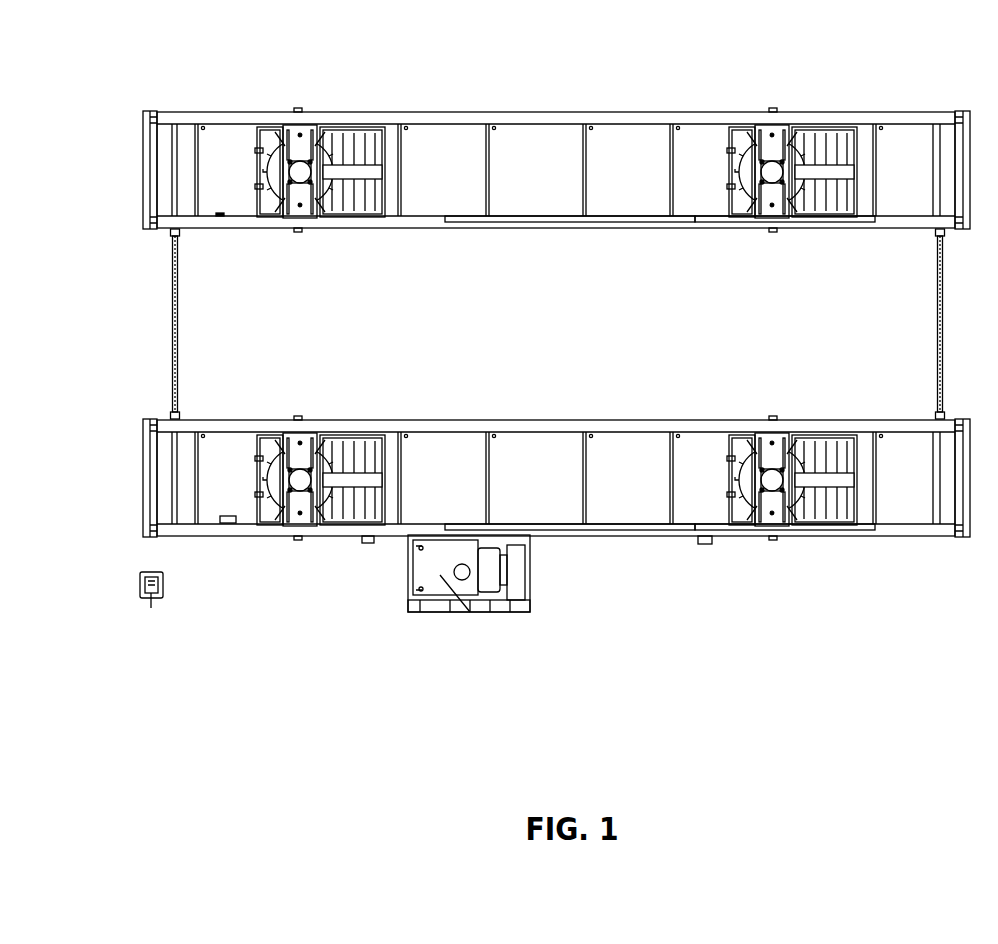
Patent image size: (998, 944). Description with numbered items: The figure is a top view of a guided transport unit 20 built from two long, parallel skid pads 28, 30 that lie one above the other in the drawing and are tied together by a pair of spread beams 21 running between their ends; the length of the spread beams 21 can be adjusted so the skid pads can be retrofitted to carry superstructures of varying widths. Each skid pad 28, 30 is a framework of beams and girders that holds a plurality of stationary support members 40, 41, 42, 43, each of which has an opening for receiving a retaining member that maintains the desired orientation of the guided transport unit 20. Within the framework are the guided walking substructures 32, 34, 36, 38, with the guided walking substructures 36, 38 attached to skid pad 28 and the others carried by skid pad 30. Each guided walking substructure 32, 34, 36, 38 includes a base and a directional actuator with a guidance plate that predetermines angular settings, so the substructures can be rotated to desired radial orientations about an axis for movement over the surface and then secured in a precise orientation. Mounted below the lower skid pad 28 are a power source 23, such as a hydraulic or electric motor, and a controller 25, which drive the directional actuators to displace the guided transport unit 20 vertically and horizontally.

The guided transport unit 20 is at (543, 74).
The spread beams 21 is at (177, 327).
The power source 23 is at (437, 572).
The controller 25 is at (158, 590).
The skid pad 28 is at (118, 456).
The skid pad 30 is at (118, 148).
The guided walking substructure 32 is at (830, 188).
The guided walking substructure 34 is at (350, 188).
The guided walking substructure 36 is at (823, 494).
The guided walking substructure 38 is at (362, 500).
The stationary support member 40 is at (778, 146).
The stationary support member 41 is at (313, 146).
The stationary support member 42 is at (778, 454).
The stationary support member 43 is at (313, 454).